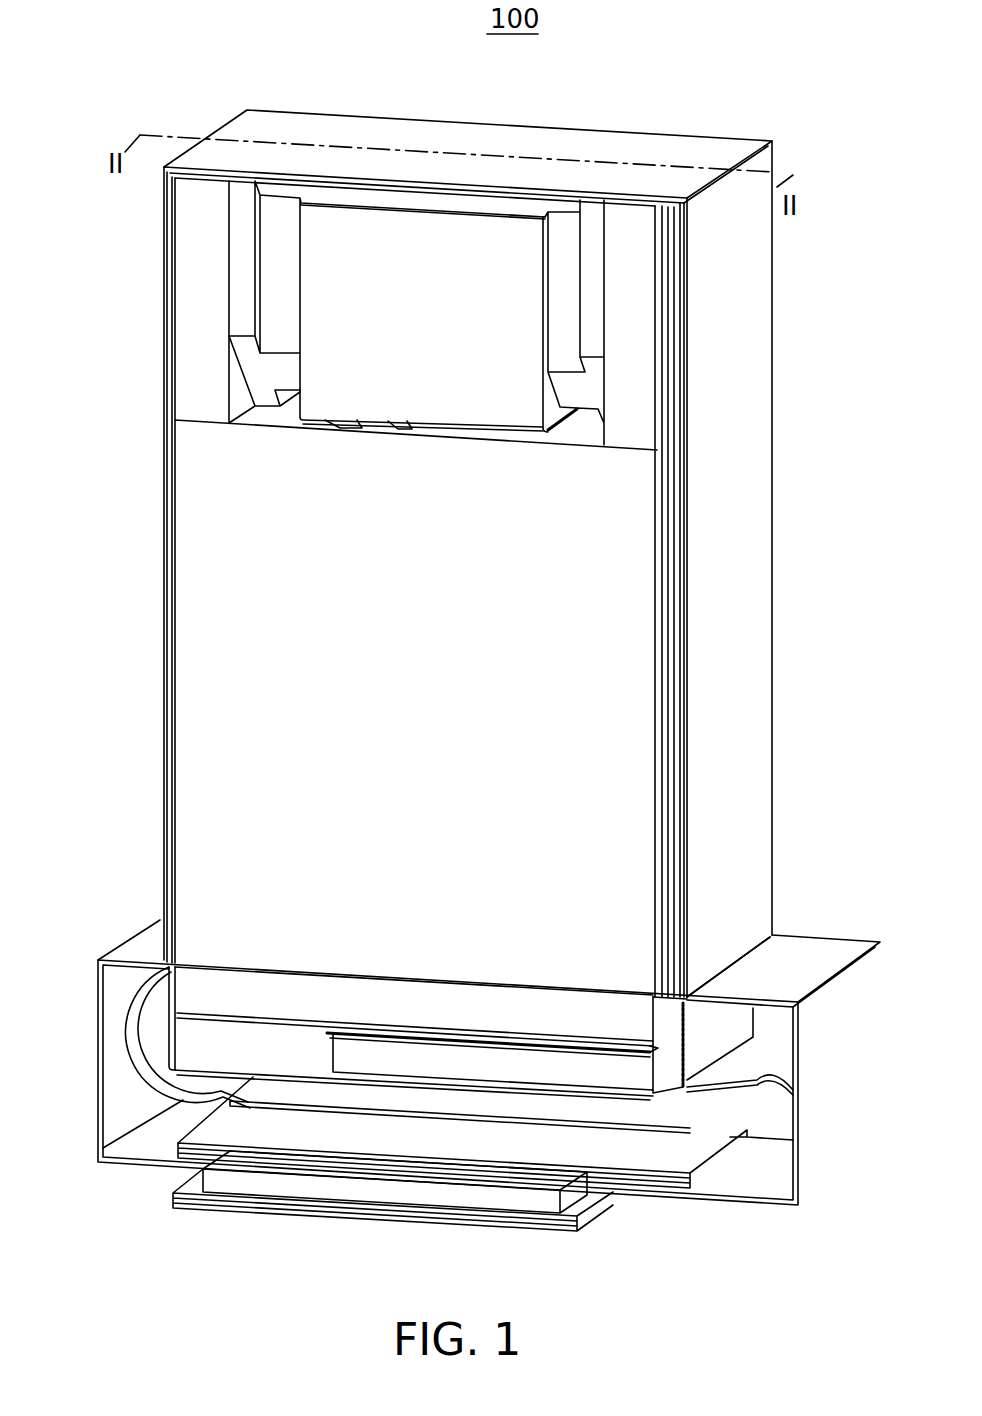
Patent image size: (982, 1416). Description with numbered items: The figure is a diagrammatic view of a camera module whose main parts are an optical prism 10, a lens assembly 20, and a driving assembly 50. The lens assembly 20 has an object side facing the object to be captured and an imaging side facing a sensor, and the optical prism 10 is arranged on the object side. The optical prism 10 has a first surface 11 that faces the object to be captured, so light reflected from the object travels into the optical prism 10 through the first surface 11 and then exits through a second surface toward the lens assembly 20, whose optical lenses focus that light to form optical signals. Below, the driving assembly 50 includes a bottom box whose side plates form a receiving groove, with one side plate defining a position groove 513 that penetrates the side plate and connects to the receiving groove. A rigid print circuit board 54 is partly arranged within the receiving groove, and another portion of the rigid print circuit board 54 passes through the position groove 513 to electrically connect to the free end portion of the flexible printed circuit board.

The optical prism 10 is at (512, 300).
The first surface 11 is at (352, 322).
The lens assembly 20 is at (575, 692).
The driving assembly 50 is at (195, 1048).
The position groove 513 is at (333, 1036).
The rigid print circuit board 54 is at (413, 1060).